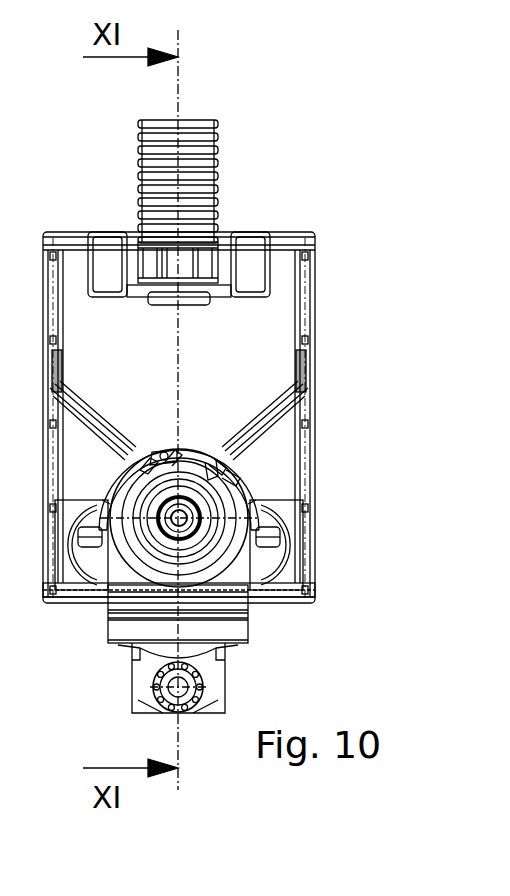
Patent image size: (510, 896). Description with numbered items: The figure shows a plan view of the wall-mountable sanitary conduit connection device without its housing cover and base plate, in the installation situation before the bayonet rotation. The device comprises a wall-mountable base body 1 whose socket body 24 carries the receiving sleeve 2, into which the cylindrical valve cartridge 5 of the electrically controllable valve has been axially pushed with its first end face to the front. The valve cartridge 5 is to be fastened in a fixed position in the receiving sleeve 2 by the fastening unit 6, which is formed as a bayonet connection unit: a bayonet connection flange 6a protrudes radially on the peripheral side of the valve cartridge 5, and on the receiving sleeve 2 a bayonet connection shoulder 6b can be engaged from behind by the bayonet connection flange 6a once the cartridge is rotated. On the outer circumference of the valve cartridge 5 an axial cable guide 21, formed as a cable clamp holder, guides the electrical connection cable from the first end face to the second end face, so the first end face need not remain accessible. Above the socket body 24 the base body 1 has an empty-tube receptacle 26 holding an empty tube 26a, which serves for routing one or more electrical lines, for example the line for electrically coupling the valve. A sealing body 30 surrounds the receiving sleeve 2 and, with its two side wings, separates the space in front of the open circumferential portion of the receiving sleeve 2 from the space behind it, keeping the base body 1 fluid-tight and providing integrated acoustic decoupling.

The base body 1 is at (316, 395).
The receiving sleeve 2 is at (228, 570).
The valve cartridge 5 is at (142, 563).
The fastening unit 6 is at (222, 460).
The bayonet connection flange 6a is at (173, 456).
The bayonet connection shoulder 6b is at (240, 478).
The cable guide 21 is at (155, 455).
The socket body 24 is at (290, 560).
The empty-tube receptacle 26 is at (208, 245).
The empty tube 26a is at (213, 150).
The sealing body 30 is at (263, 486).